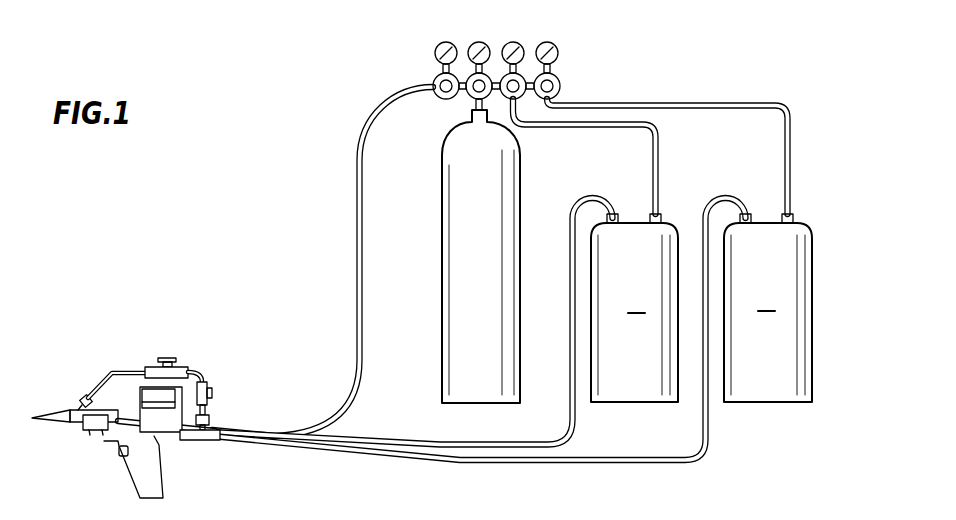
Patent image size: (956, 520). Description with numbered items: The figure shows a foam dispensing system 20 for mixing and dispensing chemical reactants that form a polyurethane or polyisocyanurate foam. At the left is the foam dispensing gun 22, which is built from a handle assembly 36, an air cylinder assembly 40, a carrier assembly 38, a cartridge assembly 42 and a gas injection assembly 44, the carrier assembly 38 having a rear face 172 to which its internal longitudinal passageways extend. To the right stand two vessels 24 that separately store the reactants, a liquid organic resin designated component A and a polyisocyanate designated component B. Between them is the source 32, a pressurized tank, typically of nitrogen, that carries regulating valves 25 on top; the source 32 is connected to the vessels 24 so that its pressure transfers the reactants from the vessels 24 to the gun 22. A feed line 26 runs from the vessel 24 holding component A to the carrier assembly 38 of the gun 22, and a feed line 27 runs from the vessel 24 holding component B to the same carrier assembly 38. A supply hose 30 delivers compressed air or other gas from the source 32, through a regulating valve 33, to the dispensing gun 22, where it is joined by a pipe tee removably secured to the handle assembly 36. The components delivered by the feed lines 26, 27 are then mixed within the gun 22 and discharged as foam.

The foam dispensing system 20 is at (312, 214).
The foam dispensing gun 22 is at (117, 361).
The vessels 24 is at (662, 403).
The regulating valves 25 is at (487, 45).
The feed line 26 is at (588, 198).
The feed line 27 is at (723, 198).
The supply hose 30 is at (376, 112).
The source 32 is at (441, 198).
The regulating valve 33 is at (439, 48).
The handle assembly 36 is at (128, 484).
The carrier assembly 38 is at (90, 434).
The air cylinder assembly 40 is at (183, 380).
The cartridge assembly 42 is at (108, 407).
The gas injection assembly 44 is at (134, 364).
The rear face 172 is at (163, 441).